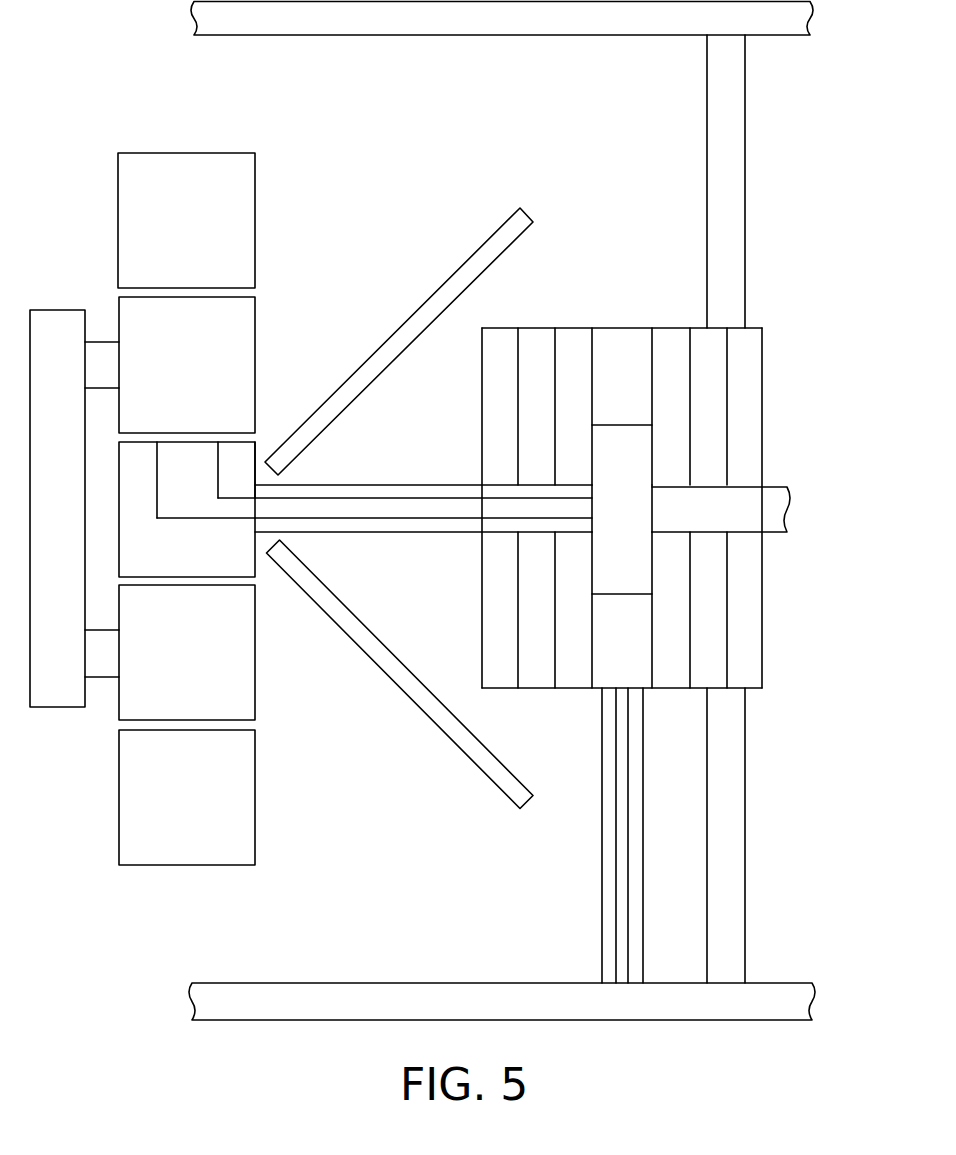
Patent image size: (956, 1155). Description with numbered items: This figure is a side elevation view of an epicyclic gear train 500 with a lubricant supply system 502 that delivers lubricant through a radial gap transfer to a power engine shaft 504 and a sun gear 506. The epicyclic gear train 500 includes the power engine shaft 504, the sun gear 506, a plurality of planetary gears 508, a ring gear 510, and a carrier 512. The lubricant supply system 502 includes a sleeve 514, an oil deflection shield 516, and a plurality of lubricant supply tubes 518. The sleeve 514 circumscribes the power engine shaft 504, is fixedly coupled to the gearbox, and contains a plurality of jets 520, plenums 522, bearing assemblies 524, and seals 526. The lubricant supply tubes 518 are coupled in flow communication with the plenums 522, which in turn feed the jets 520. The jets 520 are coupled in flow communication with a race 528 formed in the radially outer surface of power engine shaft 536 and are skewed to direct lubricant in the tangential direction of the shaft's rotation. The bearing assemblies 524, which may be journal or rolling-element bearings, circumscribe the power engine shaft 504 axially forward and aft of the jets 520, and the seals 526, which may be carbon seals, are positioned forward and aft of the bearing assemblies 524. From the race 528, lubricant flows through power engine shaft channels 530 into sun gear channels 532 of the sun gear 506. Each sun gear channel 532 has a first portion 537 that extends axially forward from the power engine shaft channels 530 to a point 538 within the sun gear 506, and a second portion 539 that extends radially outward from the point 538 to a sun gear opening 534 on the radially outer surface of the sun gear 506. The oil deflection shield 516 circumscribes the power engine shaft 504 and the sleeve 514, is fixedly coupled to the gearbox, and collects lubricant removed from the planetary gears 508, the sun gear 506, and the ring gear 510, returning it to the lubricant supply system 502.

The epicyclic gear train 500 is at (158, 122).
The lubricant supply system 502 is at (639, 509).
The power engine shaft 504 is at (770, 485).
The sun gear 506 is at (209, 558).
The planetary gears 508 is at (209, 376).
The ring gear 510 is at (209, 231).
The carrier 512 is at (53, 333).
The sleeve 514 is at (538, 328).
The oil deflection shield 516 is at (450, 285).
The lubricant supply tubes 518 is at (602, 866).
The jets 520 is at (644, 478).
The plenums 522 is at (644, 385).
The bearing assemblies 524 is at (533, 410).
The seals 526 is at (500, 372).
The race 528 is at (630, 506).
The power engine shaft channels 530 is at (423, 500).
The sun gear channels 532 is at (230, 507).
The sun gear openings 534 is at (195, 442).
The radially outer surface of power engine shaft 536 is at (422, 533).
The first portion 537 is at (300, 510).
The point 538 is at (157, 518).
The second portion 539 is at (183, 473).